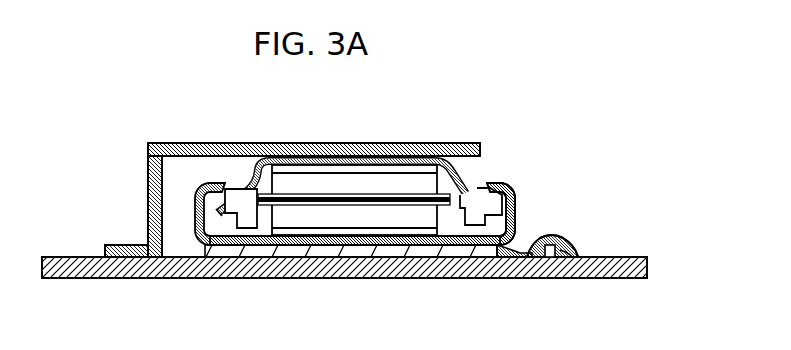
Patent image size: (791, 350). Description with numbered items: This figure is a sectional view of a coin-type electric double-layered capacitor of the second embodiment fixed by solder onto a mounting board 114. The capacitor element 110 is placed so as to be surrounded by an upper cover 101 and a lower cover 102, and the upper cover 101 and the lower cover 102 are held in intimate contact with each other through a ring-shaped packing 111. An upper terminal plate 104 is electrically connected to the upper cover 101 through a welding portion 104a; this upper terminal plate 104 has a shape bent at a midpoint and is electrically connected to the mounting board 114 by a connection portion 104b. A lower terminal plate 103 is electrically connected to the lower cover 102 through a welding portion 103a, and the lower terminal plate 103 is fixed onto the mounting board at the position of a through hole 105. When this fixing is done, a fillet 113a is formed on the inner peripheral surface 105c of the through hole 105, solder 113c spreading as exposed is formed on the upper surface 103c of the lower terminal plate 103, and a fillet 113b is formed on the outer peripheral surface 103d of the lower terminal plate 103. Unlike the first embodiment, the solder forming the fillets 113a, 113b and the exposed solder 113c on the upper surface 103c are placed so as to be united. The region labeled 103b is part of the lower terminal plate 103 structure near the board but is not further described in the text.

The upper cover 101 is at (457, 160).
The lower cover 102 is at (505, 196).
The lower terminal plate 103 is at (278, 250).
The welding portion 103a is at (360, 243).
The bonding material fillet 103b is at (497, 252).
The upper surface of lower terminal plate 103c is at (553, 240).
The outer peripheral surface of lower terminal plate 103d is at (560, 253).
The upper terminal plate 104 is at (314, 169).
The welding portion 104a is at (357, 148).
The connection portion 104b is at (127, 246).
The through hole 105 is at (517, 245).
The inner peripheral surface of through hole 105c is at (547, 258).
The capacitor element 110 is at (374, 203).
The ring-shaped packing 111 is at (501, 192).
The fillet 113a is at (548, 256).
The fillet 113b is at (568, 255).
The solder spreading as exposed 113c is at (556, 243).
The mounting board 114 is at (168, 268).